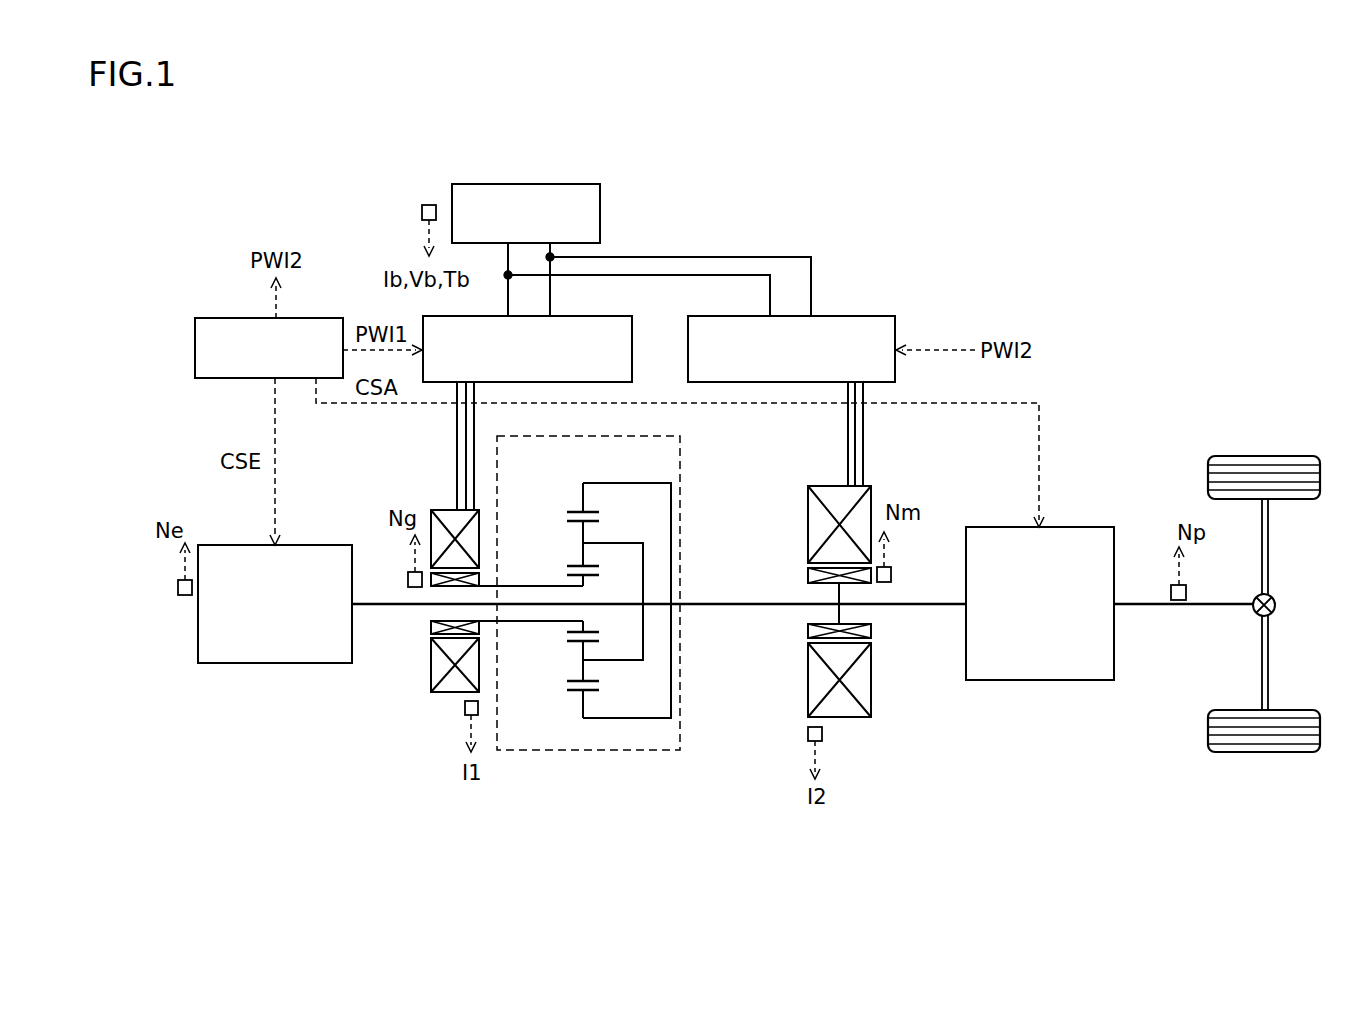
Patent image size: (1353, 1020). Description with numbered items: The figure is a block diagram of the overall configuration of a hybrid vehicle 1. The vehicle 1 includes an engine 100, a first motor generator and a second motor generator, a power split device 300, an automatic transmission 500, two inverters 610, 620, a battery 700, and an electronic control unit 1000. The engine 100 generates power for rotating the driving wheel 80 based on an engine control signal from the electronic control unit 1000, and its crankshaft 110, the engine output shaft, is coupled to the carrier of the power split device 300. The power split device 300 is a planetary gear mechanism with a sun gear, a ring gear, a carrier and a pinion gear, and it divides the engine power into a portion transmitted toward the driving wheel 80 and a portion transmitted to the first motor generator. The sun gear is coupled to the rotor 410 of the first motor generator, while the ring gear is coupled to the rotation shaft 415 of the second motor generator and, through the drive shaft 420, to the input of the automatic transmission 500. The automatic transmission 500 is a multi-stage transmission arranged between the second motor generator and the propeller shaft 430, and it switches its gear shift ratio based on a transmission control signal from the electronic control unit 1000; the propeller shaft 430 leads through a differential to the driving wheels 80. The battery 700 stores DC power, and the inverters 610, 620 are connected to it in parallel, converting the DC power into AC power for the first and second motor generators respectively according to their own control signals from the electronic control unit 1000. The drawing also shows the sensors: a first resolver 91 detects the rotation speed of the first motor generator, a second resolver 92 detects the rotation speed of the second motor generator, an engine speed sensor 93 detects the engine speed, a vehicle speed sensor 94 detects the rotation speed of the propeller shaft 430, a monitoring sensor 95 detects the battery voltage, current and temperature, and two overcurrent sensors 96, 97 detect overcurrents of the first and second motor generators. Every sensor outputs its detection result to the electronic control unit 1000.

The vehicle 1 is at (662, 124).
The driving wheel 80 is at (1289, 456).
The resolver 91 is at (408, 580).
The resolver 92 is at (891, 574).
The engine speed sensor 93 is at (178, 587).
The vehicle speed sensor 94 is at (1186, 589).
The monitoring sensor 95 is at (429, 205).
The overcurrent sensor 96 is at (465, 708).
The overcurrent sensor 97 is at (808, 734).
The engine 100 is at (305, 545).
The crankshaft 110 is at (384, 606).
The power split device 300 is at (590, 612).
The rotor 410 is at (431, 626).
The rotation shaft 415 is at (808, 630).
The drive shaft 420 is at (712, 606).
The propeller shaft 430 is at (1210, 606).
The automatic transmission 500 is at (1063, 527).
The inverter 610 is at (583, 316).
The inverter 620 is at (848, 316).
The battery 700 is at (600, 211).
The electronic control unit 1000 is at (195, 350).